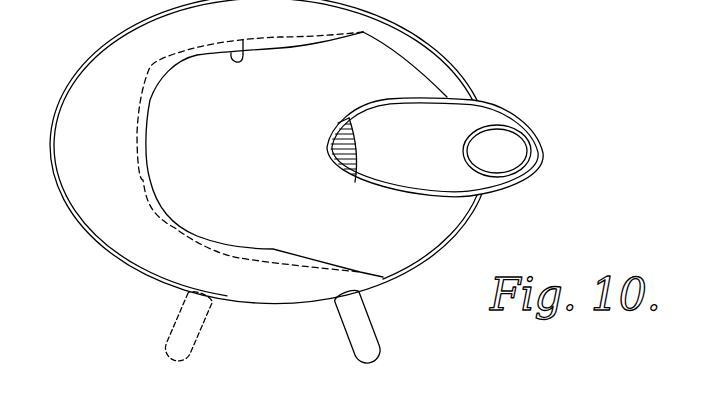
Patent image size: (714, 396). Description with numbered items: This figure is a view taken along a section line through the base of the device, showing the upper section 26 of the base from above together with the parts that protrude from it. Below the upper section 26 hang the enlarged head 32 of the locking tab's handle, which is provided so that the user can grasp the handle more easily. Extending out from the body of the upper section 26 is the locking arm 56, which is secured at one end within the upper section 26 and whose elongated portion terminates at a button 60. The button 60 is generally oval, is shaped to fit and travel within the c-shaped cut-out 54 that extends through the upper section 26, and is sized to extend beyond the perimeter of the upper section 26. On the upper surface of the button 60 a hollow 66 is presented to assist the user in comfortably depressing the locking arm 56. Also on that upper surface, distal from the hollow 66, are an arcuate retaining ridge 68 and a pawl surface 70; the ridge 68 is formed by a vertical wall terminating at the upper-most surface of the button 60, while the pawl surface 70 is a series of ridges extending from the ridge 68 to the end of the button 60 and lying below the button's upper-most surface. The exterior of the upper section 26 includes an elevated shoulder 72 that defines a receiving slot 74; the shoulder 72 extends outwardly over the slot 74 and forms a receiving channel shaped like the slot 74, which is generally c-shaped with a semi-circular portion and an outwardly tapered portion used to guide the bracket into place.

The upper section 26 is at (104, 254).
The enlarged head 32 is at (377, 343).
The c-shaped cut-out 54 is at (451, 100).
The locking arm 56 is at (437, 149).
The button 60 is at (540, 145).
The hollow 66 is at (510, 170).
The arcuate retaining ridge 68 is at (338, 123).
The pawl surface 70 is at (333, 138).
The elevated shoulder 72 is at (194, 53).
The receiving slot 74 is at (243, 40).